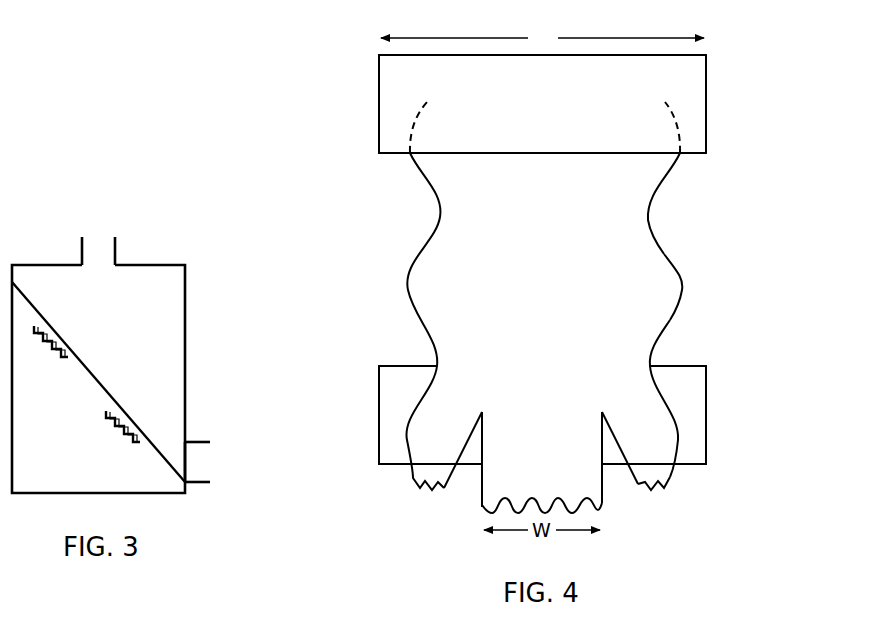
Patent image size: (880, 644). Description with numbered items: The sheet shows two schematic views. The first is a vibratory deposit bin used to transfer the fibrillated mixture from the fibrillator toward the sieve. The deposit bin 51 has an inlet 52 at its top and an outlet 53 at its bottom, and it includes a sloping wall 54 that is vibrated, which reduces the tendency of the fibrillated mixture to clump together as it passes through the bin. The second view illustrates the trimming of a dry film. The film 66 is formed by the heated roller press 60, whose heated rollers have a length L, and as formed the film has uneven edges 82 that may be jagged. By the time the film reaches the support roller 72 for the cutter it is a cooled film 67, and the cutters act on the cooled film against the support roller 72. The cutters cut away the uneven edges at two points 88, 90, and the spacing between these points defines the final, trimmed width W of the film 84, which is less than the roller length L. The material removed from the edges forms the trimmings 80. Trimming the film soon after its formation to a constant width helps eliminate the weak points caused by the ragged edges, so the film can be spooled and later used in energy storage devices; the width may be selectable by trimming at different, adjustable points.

In FIG. 3, the deposit bin 51 is at (185, 292).
In FIG. 3, the inlet 52 is at (117, 247).
In FIG. 3, the outlet 53 is at (200, 438).
In FIG. 3, the sloping wall 54 is at (92, 372).
In FIG. 4, the heated roller press 60 is at (706, 105).
In FIG. 4, the film 66 is at (663, 180).
In FIG. 4, the cooled film 67 is at (665, 335).
In FIG. 4, the support roller 72 is at (706, 415).
In FIG. 4, the trimmings 80 is at (670, 480).
In FIG. 4, the uneven edges 82 is at (682, 288).
In FIG. 4, the trimmed film 84 is at (604, 478).
In FIG. 4, the cutting point 88 is at (482, 410).
In FIG. 4, the cutting point 90 is at (602, 410).